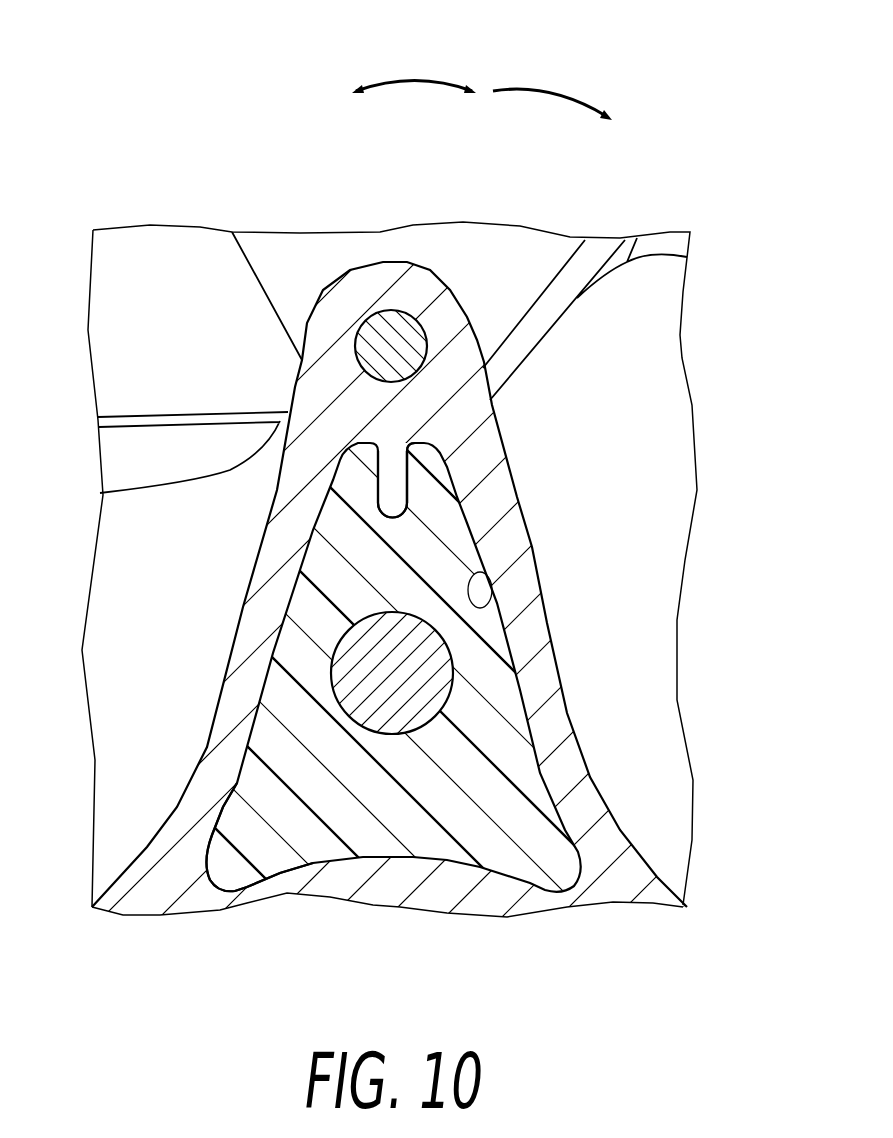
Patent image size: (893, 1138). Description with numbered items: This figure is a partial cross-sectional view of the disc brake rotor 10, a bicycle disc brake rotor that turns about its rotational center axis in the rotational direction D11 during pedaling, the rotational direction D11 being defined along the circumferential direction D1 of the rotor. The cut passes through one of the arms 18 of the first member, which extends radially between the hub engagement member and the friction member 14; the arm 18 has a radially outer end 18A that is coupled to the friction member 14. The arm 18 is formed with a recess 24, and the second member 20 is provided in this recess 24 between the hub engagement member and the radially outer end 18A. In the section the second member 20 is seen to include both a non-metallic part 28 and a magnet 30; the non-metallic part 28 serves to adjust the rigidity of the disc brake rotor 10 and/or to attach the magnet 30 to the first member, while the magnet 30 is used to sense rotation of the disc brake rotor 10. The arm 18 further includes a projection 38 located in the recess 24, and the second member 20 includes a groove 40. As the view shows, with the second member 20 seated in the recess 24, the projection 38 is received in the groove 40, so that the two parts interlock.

The disc brake rotor 10 is at (664, 202).
The friction member 14 is at (157, 497).
The arm 18 is at (456, 269).
The radially outer end 18A is at (387, 277).
The second member 20 is at (463, 877).
The recess 24 is at (487, 610).
The non-metallic part 28 is at (312, 777).
The magnet 30 is at (389, 695).
The projection 38 is at (412, 447).
The groove 40 is at (388, 500).
The circumferential direction D1 is at (413, 78).
The rotational direction D11 is at (554, 91).